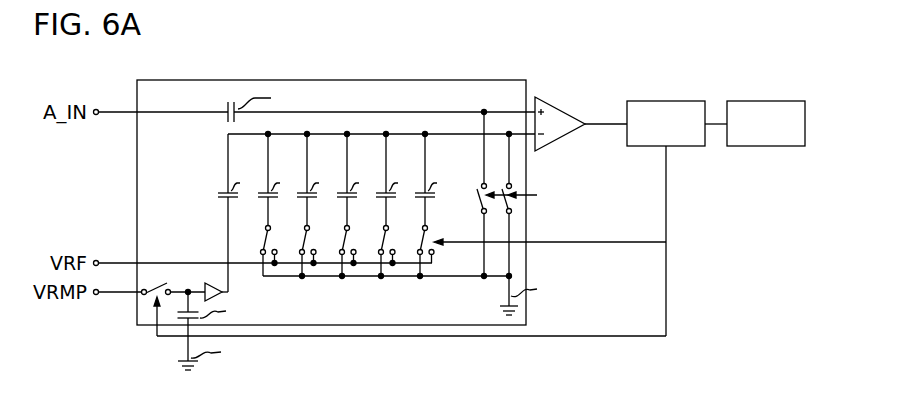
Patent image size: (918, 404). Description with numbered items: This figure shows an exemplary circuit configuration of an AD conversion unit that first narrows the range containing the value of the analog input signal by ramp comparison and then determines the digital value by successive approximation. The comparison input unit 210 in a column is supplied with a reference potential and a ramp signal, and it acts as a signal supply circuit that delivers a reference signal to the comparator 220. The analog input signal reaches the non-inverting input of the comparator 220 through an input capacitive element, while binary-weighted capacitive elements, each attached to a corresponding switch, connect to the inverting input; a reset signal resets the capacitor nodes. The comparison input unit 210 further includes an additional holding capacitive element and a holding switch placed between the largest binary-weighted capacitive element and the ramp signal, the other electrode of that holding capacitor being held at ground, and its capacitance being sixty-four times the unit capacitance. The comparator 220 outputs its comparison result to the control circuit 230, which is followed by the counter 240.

The comparison input unit 210 is at (240, 79).
The comparator 220 is at (560, 107).
The control circuit 230 is at (667, 101).
The counter 240 is at (764, 101).